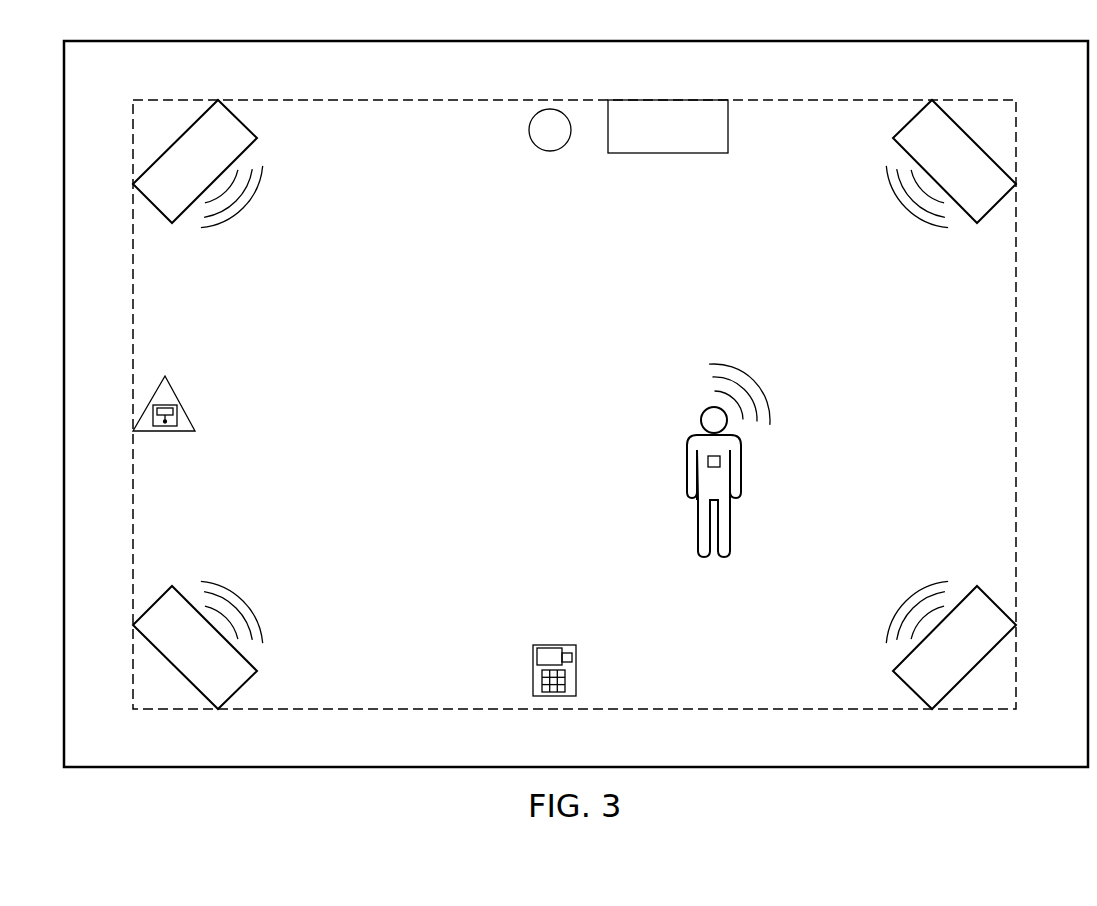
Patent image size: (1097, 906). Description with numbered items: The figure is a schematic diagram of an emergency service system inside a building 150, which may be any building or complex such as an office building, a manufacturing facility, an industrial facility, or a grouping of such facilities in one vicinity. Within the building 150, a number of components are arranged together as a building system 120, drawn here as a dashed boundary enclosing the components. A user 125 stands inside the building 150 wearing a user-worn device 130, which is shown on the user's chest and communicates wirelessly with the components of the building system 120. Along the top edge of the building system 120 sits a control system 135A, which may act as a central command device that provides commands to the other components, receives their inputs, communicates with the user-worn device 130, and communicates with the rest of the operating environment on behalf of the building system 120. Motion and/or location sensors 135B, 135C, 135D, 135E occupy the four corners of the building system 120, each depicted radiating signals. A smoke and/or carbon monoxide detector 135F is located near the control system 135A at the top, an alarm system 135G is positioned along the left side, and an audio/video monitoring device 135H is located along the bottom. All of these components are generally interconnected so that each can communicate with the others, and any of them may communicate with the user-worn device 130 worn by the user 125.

The building system 120 is at (822, 99).
The user 125 is at (687, 450).
The user-worn device 130 is at (720, 461).
The control system 135A is at (662, 155).
The motion and/or location sensor 135B is at (998, 203).
The motion and/or location sensor 135C is at (1000, 602).
The motion and/or location sensor 135D is at (152, 603).
The motion and/or location sensor 135E is at (152, 203).
The smoke and/or carbon monoxide detector 135F is at (550, 152).
The alarm system 135G is at (183, 407).
The audio/video monitoring device 135H is at (577, 672).
The building 150 is at (928, 768).